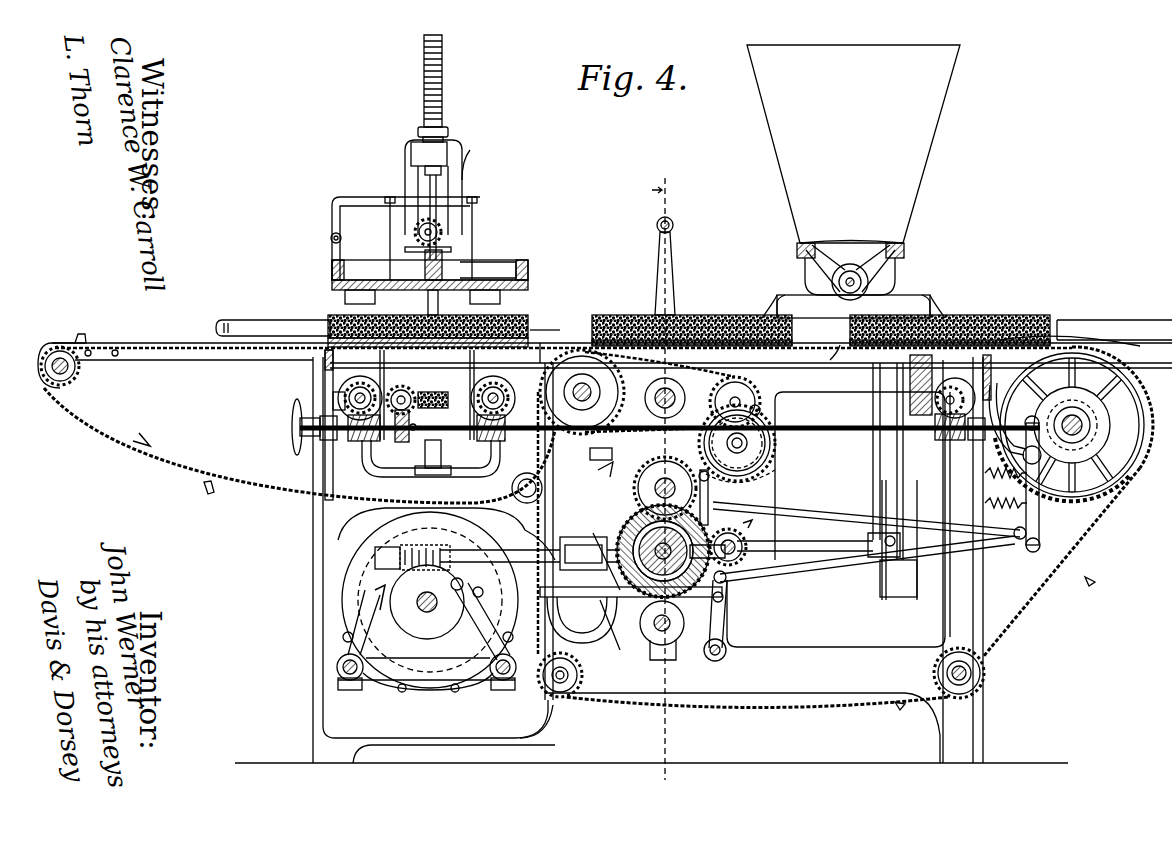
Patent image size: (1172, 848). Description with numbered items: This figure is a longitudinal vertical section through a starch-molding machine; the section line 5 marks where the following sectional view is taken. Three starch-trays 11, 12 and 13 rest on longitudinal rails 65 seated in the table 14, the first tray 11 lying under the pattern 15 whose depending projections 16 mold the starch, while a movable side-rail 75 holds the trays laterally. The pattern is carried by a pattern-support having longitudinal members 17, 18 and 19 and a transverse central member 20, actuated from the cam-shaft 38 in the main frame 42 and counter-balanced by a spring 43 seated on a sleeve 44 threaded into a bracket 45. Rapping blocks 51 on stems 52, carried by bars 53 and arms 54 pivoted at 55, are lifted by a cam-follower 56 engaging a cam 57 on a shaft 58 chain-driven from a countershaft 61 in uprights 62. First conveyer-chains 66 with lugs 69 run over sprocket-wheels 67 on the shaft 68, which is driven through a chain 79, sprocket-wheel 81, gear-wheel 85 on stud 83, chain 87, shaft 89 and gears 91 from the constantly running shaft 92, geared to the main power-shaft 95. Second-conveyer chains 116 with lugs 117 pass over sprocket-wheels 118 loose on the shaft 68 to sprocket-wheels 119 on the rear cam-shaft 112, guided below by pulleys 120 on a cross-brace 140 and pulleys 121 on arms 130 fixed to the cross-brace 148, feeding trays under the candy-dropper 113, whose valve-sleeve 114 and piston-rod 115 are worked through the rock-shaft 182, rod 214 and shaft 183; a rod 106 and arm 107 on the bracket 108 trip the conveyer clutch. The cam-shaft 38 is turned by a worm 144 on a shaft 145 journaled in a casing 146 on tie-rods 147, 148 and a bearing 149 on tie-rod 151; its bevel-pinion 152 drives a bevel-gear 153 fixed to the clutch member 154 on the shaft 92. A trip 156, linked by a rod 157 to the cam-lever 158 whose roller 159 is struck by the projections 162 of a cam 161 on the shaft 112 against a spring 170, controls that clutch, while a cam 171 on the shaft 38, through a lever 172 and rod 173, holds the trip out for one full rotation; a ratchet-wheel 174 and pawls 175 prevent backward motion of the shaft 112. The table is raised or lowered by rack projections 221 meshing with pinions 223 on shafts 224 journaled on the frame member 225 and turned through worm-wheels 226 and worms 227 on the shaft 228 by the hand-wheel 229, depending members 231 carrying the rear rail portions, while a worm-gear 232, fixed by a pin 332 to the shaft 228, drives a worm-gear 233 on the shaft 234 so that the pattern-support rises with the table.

The section line 5 is at (661, 477).
The starch-tray 11 is at (545, 330).
The starch-tray 12 is at (622, 315).
The starch-tray 13 is at (975, 316).
The table 14 is at (548, 330).
The pattern 15 is at (485, 296).
The depending projections 16 is at (385, 294).
The longitudinal member 17 is at (332, 270).
The longitudinal member 18 is at (460, 280).
The longitudinal member 19 is at (530, 270).
The transverse central member 20 is at (500, 262).
The cam-shaft 38 is at (417, 600).
The main frame 42 is at (313, 712).
The counter-balancing spring 43 is at (444, 78).
The sleeve 44 is at (448, 130).
The bracket 45 is at (405, 158).
The metal blocks 51 is at (445, 262).
The stems 52 is at (476, 215).
The parallel bars 53 is at (474, 197).
The arms 54 is at (362, 197).
The pivot 55 is at (331, 238).
The cam-follower 56 is at (472, 160).
The cam 57 is at (415, 228).
The shaft 58 is at (452, 248).
The countershaft 61 is at (674, 222).
The uprights 62 is at (672, 275).
The longitudinal rails 65 is at (210, 352).
The conveyer-chains 66 is at (175, 470).
The sprocket-wheels 67 is at (78, 372).
The transverse shaft 68 is at (615, 363).
The lugs 69 is at (80, 334).
The movable side-rail 75 is at (258, 320).
The chain 79 is at (748, 385).
The sprocket-wheel 81 is at (765, 408).
The stud 83 is at (748, 443).
The gear-wheel 85 is at (775, 478).
The chain 87 is at (770, 455).
The transverse shaft 89 is at (655, 470).
The gears 91 is at (598, 460).
The transverse shaft 92 is at (620, 528).
The main power-shaft 95 is at (745, 540).
The rod 106 is at (830, 500).
The arm 107 is at (985, 503).
The bracket 108 is at (1100, 492).
The cam-shaft 112 is at (1140, 395).
The candy-dropper 113 is at (853, 144).
The valve-sleeve 114 is at (868, 272).
The piston-rod 115 is at (870, 284).
The endless chains 116 is at (1040, 622).
The lugs 117 is at (1092, 580).
The sprocket-wheels 118 is at (510, 445).
The sprocket-wheels 119 is at (1145, 455).
The pulleys 120 is at (985, 678).
The pulleys 121 is at (582, 675).
The arms 130 is at (535, 700).
The cross-brace 140 is at (950, 672).
The worm 144 is at (405, 545).
The longitudinal shaft 145 is at (505, 550).
The casing 146 is at (378, 548).
The tie-rod 147 is at (337, 667).
The tie-rod 148 is at (500, 690).
The bearing 149 is at (575, 537).
The tie-rod 151 is at (650, 635).
The bevel-pinion 152 is at (600, 590).
The bevel-gear 153 is at (625, 515).
The clutch member 154 is at (712, 510).
The trip 156 is at (725, 590).
The rod 157 is at (826, 560).
The cam-lever 158 is at (1040, 525).
The cam-roller 159 is at (993, 455).
The cam 161 is at (1085, 398).
The projections 162 is at (1120, 400).
The spring 170 is at (985, 473).
The cam 171 is at (419, 602).
The lever 172 is at (470, 645).
The rod 173 is at (692, 600).
The ratchet-wheel 174 is at (1082, 425).
The pawls 175 is at (1050, 388).
The rock-shaft 182 is at (885, 460).
The shaft 183 is at (678, 394).
The rod 214 is at (868, 536).
The downward projections 221 is at (325, 372).
The pinions 223 is at (348, 392).
The transverse shafts 224 is at (340, 398).
The transverse member 225 is at (325, 345).
The worm-wheel 226 is at (320, 422).
The worms 227 is at (358, 441).
The shaft 228 is at (470, 432).
The hand-wheel 229 is at (292, 435).
The depending members 231 is at (937, 385).
The worm-gear 232 is at (395, 440).
The worm-gear 233 is at (435, 392).
The transverse shaft 234 is at (403, 387).
The pin 332 is at (413, 432).